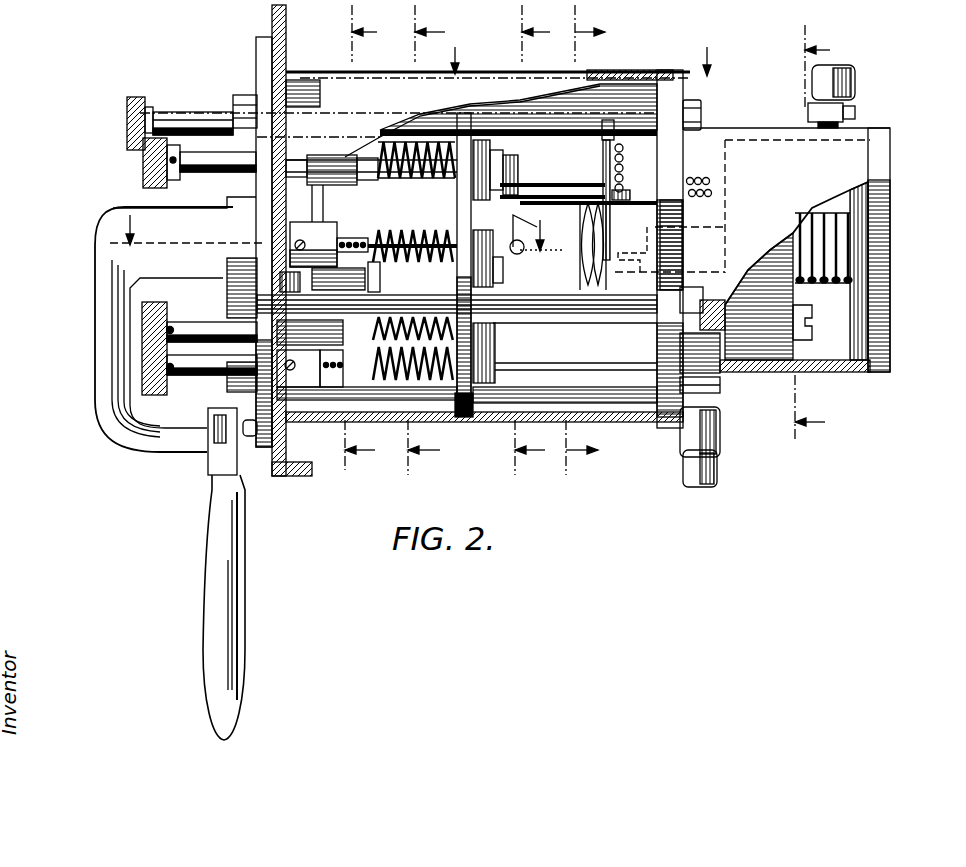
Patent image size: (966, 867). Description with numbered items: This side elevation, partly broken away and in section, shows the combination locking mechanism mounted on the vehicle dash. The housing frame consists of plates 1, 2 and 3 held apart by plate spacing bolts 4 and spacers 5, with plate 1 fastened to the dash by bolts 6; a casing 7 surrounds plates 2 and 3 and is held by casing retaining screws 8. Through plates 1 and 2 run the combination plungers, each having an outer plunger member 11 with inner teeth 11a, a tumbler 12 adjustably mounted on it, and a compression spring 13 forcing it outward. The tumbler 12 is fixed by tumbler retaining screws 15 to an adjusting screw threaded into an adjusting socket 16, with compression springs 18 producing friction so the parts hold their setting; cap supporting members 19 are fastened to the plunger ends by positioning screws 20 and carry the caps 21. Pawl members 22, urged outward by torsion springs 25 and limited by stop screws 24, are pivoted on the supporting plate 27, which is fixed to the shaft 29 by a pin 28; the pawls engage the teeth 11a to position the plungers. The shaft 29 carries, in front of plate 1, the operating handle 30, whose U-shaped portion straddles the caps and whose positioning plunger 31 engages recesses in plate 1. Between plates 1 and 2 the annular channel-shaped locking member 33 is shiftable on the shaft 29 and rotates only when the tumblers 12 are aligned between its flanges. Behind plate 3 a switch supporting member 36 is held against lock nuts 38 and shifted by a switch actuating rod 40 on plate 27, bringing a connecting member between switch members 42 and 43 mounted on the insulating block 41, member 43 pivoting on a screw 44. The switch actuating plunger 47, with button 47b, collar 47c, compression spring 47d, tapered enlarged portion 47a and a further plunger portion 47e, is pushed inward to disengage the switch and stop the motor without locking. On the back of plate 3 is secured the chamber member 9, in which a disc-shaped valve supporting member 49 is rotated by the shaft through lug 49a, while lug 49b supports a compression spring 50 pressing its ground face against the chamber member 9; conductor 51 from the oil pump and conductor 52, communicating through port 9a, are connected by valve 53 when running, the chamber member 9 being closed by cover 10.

The plate 1 is at (262, 458).
The plate 2 is at (477, 423).
The plate 3 is at (637, 443).
The plate spacing bolts 4 is at (210, 393).
The spacers 5 is at (632, 97).
The bolts 6 is at (184, 230).
The casing 7 is at (620, 431).
The casing retaining screws 8 is at (462, 440).
The chamber member 9 is at (833, 383).
The port 9a is at (727, 323).
The cover 10 is at (885, 305).
The plunger member 11 is at (215, 173).
The annular ridges or teeth 11a is at (470, 166).
The tumbler 12 is at (306, 186).
The compression spring 13 is at (405, 179).
The tumbler retaining screws 15 is at (296, 212).
The adjusting sockets 16 is at (544, 235).
The compression springs 18 is at (356, 238).
The cap supporting members 19 is at (178, 172).
The cap supporting member positioning screws 20 is at (174, 181).
The caps 21 is at (144, 186).
The pawl members 22 is at (492, 289).
The stop screws 24 is at (517, 185).
The torsion springs 25 is at (512, 159).
The supporting plate 27 is at (477, 283).
The pin 28 is at (537, 227).
The shaft 29 is at (405, 230).
The operating handle 30 is at (97, 321).
The operating handle positioning plunger 31 is at (243, 435).
The locking member 33 is at (326, 222).
The switch supporting member 36 is at (603, 216).
The lock nuts 38 is at (603, 224).
The switch actuating rod 40 is at (561, 200).
The insulating block 41 is at (614, 198).
The switch member 42 is at (624, 181).
The switch member 43 is at (624, 168).
The screw 44 is at (632, 130).
The switch actuating plunger 47 is at (198, 112).
The enlarged portion 47a is at (550, 140).
The button 47b is at (150, 86).
The collar 47c is at (290, 112).
The compression spring 47d is at (440, 130).
The screw portion 47e is at (487, 130).
The valve supporting member 49 is at (778, 252).
The lug 49a is at (700, 274).
The lug 49b is at (835, 243).
The compression spring 50 is at (855, 257).
The conductor 51 is at (813, 85).
The conductor 52 is at (720, 480).
The valve 53 is at (812, 321).